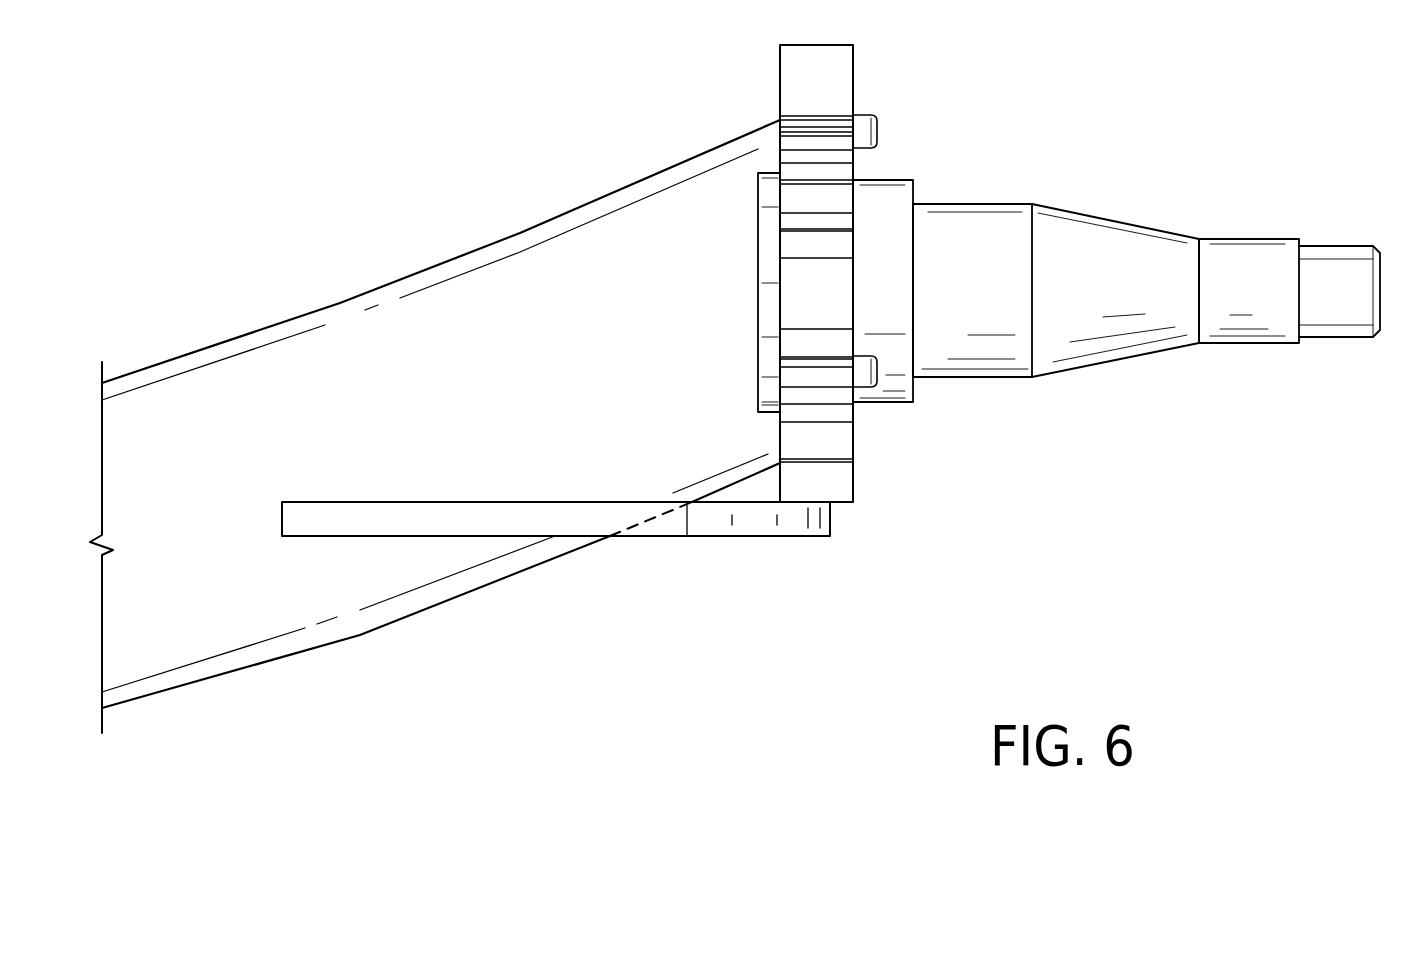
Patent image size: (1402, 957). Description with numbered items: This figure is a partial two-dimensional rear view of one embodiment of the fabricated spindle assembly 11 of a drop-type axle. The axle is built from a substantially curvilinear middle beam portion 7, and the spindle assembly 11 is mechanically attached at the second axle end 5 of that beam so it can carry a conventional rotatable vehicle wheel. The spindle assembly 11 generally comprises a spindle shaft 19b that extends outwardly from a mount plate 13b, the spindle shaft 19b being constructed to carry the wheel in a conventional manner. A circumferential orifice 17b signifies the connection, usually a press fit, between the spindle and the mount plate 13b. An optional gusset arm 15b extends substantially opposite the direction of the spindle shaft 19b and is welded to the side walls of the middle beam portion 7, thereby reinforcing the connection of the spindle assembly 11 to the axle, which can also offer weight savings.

The second axle end 5 is at (619, 253).
The middle beam portion 7 is at (250, 311).
The spindle assembly 11 is at (1069, 255).
The mount plate 13b is at (837, 443).
The gusset arm 15b is at (488, 519).
The circumferential orifice 17b is at (853, 404).
The spindle shaft 19b is at (1092, 344).